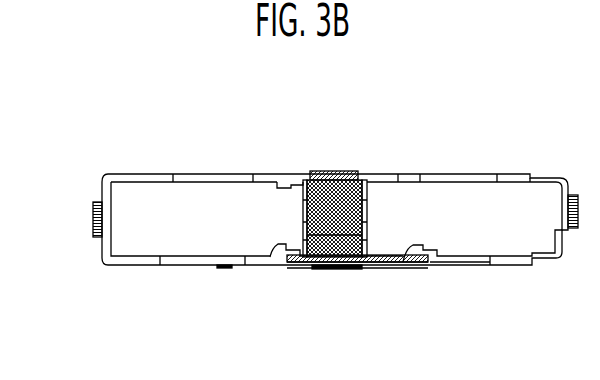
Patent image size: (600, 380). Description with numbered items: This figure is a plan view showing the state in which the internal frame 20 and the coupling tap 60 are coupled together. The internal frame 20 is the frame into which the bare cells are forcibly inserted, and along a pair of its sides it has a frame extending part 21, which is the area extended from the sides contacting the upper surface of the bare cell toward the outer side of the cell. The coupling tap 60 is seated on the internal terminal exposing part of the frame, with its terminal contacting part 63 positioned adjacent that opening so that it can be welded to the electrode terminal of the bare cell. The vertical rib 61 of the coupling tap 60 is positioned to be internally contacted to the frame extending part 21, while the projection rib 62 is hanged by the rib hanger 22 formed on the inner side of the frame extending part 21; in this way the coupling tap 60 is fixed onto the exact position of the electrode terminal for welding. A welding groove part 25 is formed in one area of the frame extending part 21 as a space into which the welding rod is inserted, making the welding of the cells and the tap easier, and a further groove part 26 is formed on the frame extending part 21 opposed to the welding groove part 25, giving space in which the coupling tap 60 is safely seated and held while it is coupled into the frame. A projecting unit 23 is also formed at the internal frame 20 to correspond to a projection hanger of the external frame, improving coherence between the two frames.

The internal frame 20 is at (108, 151).
The frame extending part 21 is at (187, 176).
The rib hanger 22 is at (285, 188).
The projecting unit 23 is at (222, 268).
The welding groove part 25 is at (398, 171).
The groove part 26 is at (408, 268).
The coupling tap 60 is at (337, 159).
The vertical rib 61 is at (334, 171).
The projection rib 62 is at (296, 170).
The terminal contacting part 63 is at (290, 93).